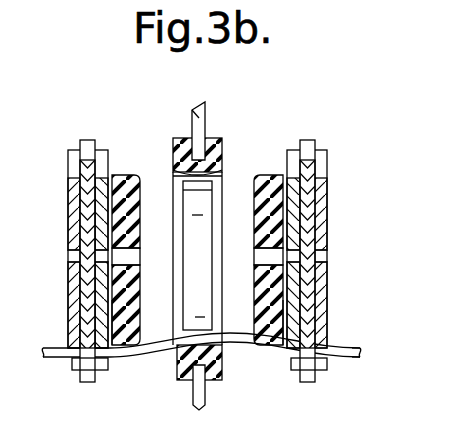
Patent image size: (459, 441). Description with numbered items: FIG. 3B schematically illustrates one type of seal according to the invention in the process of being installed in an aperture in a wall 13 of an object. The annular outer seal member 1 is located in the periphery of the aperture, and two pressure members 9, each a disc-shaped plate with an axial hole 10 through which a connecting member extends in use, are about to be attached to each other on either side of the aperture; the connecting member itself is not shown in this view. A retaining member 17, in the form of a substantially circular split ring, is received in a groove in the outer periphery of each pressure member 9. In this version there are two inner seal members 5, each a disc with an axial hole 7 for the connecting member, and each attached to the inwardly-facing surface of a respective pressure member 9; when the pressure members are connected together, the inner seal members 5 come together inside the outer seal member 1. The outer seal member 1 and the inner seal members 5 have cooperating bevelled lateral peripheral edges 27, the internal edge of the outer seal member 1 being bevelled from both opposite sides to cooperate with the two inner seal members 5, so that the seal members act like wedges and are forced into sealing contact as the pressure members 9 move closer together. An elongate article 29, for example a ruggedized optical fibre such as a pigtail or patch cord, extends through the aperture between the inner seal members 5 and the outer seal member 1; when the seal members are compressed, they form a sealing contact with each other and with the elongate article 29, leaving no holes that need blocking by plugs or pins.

The outer seal member 1 is at (177, 380).
The inner seal member 5 is at (142, 330).
The axial hole 7 is at (133, 257).
The pressure member 9 is at (325, 195).
The axial hole 10 is at (70, 257).
The wall 13 is at (203, 112).
The retaining member 17 is at (87, 142).
The bevelled lateral peripheral edges 27 is at (173, 152).
The elongate article 29 is at (350, 360).